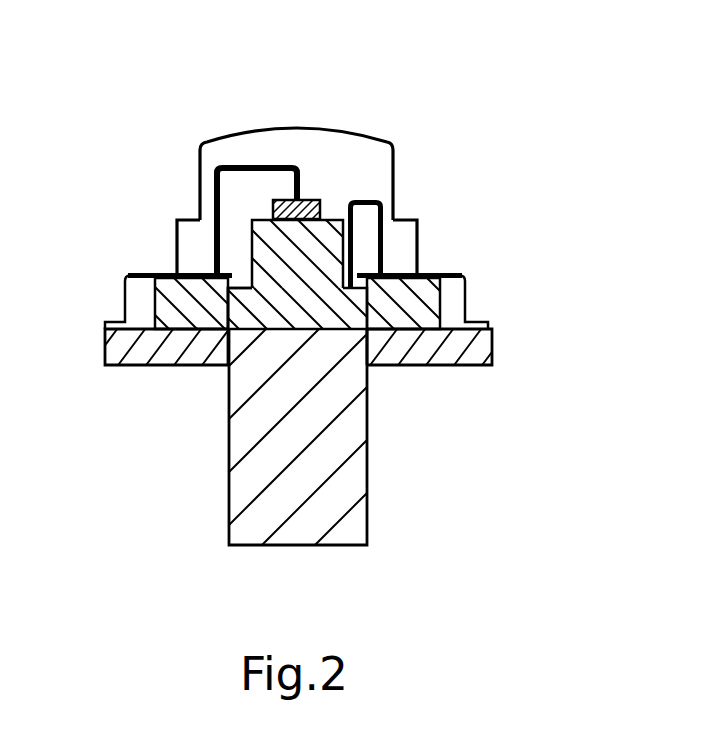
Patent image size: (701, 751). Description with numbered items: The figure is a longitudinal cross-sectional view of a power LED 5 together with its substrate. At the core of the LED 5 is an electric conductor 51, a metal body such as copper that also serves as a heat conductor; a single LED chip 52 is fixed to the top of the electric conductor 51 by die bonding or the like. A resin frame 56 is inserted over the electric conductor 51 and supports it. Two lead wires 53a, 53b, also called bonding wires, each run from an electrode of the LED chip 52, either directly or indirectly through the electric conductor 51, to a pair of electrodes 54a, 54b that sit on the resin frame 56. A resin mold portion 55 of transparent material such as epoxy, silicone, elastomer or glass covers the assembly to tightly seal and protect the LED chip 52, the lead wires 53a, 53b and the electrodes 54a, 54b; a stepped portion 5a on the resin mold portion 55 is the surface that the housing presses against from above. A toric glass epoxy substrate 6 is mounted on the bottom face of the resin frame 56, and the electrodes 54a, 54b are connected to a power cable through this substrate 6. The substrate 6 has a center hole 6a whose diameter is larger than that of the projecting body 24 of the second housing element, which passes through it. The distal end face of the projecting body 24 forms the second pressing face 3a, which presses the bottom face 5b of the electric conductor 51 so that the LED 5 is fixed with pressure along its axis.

The LED 5 is at (415, 81).
The stepped portion 5a is at (177, 220).
The bottom face 5b is at (322, 334).
The second pressing face 3a is at (258, 314).
The glass epoxy substrate 6 is at (493, 358).
The center hole 6a is at (237, 332).
The projecting body 24 is at (368, 488).
The electric conductor 51 is at (252, 245).
The LED chip 52 is at (321, 200).
The lead wire 53a is at (240, 165).
The lead wire 53b is at (384, 250).
The electrode 54a is at (124, 291).
The electrode 54b is at (470, 292).
The resin mold portion 55 is at (292, 128).
The resin frame 56 is at (160, 306).